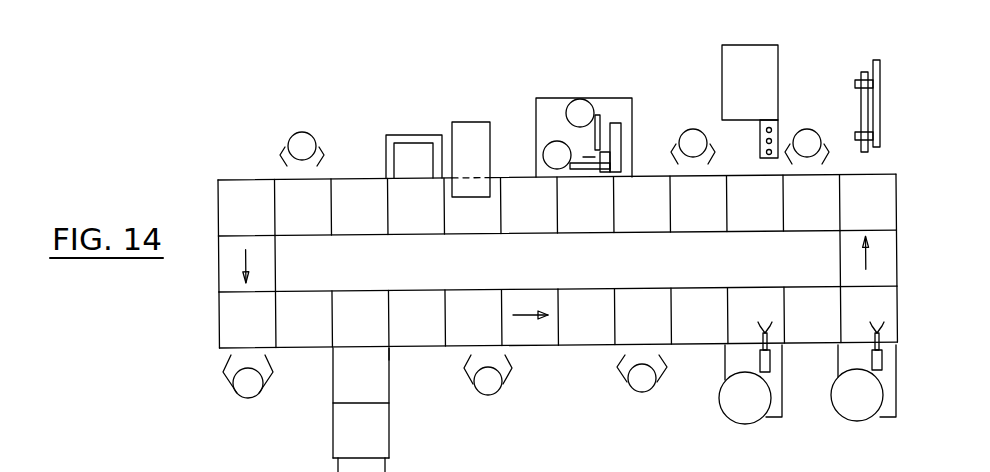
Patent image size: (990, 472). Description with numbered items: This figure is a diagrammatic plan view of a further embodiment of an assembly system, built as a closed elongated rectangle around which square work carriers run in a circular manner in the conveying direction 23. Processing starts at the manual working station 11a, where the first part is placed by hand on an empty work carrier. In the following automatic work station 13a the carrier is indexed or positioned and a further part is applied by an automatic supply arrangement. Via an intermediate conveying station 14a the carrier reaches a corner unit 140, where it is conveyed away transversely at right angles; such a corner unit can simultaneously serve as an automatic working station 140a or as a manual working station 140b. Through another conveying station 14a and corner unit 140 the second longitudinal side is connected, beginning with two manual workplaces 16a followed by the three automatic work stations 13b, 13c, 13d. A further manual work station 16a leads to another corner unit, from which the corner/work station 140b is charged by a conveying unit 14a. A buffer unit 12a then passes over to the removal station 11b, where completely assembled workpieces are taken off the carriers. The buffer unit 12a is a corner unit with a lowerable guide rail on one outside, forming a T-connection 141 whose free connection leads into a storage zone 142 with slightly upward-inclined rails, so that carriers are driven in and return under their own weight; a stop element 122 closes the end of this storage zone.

The corner unit 140 is at (243, 188).
The automatic working station 140a is at (848, 327).
The manual working station 140b is at (228, 323).
The conveying station 14a is at (225, 267).
The manual workplace 16a is at (302, 230).
The automatic work station 13d is at (413, 227).
The automatic work station 13c is at (473, 228).
The conveying direction 23 is at (525, 315).
The automatic work station 13b is at (583, 228).
The manual working station 11a is at (640, 299).
The automatic work station 13a is at (740, 332).
The buffer unit 12a is at (401, 359).
The removal station 11b is at (460, 338).
The T-connection 141 is at (342, 332).
The storage zone 142 is at (347, 422).
The stopper 122 is at (391, 465).